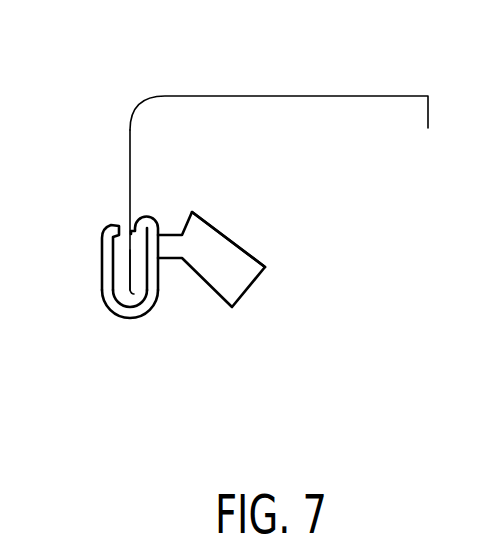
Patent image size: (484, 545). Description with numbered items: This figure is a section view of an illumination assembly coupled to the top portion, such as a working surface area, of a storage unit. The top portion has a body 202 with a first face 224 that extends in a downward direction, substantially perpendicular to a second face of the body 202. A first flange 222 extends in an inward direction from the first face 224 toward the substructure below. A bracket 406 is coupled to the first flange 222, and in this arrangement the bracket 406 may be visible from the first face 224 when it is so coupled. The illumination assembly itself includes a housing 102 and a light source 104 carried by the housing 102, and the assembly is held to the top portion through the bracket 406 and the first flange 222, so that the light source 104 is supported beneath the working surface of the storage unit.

The body 202 is at (324, 95).
The first face 224 is at (128, 165).
The first flange 222 is at (134, 290).
The bracket 406 is at (103, 303).
The housing 102 is at (252, 285).
The light source 104 is at (215, 287).